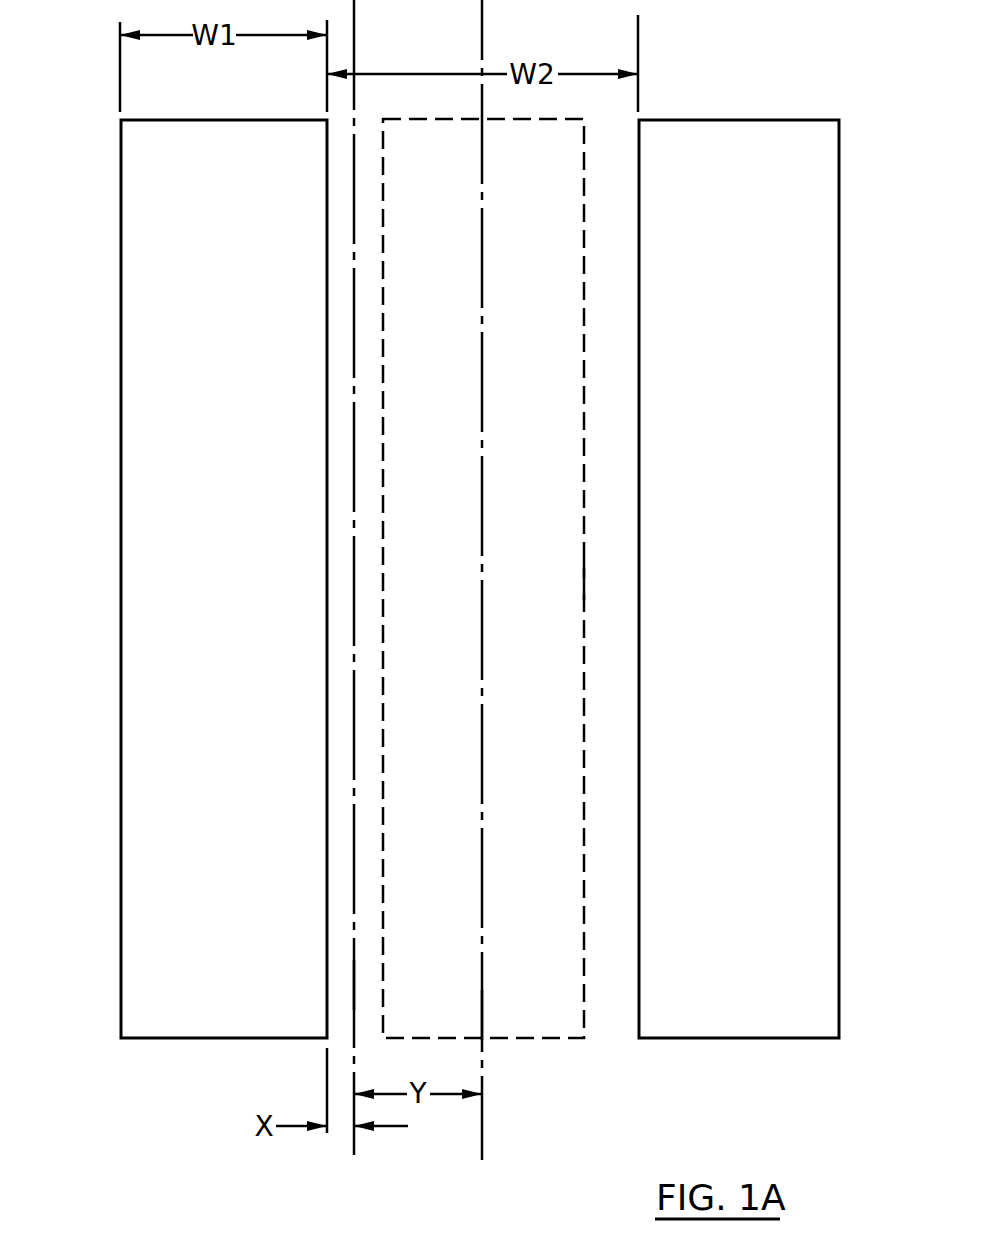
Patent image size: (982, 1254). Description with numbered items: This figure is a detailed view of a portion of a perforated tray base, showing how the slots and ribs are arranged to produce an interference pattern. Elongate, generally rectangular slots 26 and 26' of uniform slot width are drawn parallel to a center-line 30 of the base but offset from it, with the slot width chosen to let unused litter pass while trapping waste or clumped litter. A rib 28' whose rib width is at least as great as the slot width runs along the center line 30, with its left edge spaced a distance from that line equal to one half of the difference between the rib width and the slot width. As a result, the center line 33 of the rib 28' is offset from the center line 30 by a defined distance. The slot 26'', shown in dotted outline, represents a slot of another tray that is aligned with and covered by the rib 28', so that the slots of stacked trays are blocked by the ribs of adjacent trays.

The slot 26 is at (739, 553).
The slot 26' is at (188, 579).
The slot of tray 26'' is at (649, 559).
The rib 28' is at (483, 578).
The center-line of the base 30 is at (354, 990).
The center line of the rib 33 is at (484, 1020).